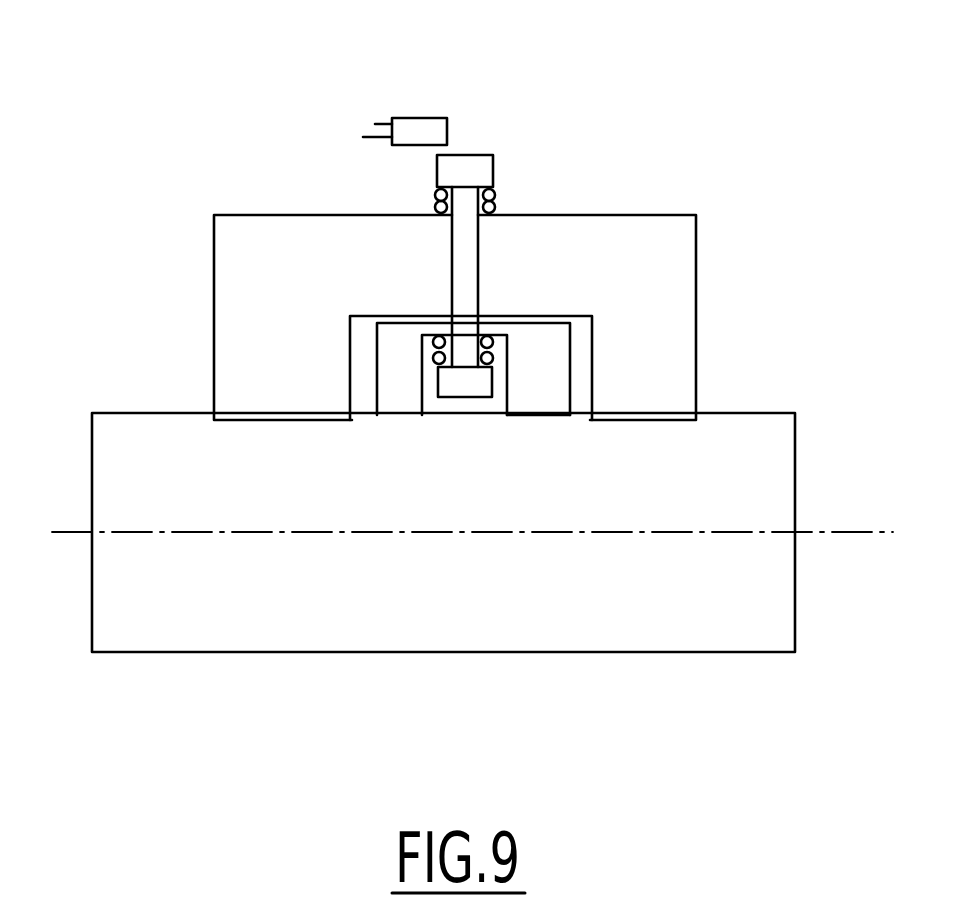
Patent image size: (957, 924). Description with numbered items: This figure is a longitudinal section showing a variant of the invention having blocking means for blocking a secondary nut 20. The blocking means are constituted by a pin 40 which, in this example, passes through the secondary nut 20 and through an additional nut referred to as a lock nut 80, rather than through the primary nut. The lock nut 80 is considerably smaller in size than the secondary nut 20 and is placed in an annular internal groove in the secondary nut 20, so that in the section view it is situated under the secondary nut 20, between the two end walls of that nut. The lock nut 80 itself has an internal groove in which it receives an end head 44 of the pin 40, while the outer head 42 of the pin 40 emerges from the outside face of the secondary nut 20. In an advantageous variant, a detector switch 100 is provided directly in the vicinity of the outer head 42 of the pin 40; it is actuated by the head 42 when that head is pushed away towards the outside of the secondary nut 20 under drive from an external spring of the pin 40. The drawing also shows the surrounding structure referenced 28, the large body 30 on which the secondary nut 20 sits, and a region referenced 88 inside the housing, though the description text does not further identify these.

The secondary nut 20 is at (652, 237).
The inner housing 28 is at (552, 316).
The shaft body 30 is at (478, 613).
The pin 40 is at (465, 263).
The outer head 42 is at (467, 167).
The end head 44 is at (452, 387).
The lock nut 80 is at (553, 386).
The inner wall 88 is at (535, 323).
The detector switch 100 is at (425, 110).